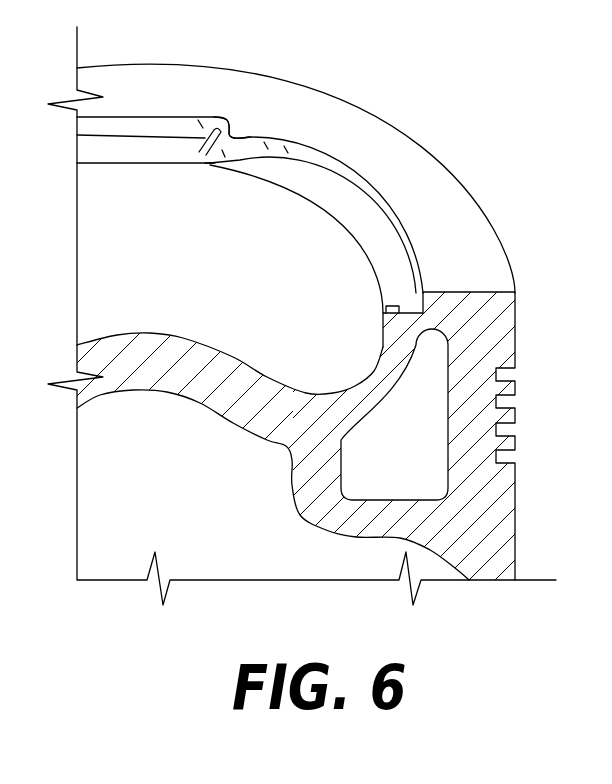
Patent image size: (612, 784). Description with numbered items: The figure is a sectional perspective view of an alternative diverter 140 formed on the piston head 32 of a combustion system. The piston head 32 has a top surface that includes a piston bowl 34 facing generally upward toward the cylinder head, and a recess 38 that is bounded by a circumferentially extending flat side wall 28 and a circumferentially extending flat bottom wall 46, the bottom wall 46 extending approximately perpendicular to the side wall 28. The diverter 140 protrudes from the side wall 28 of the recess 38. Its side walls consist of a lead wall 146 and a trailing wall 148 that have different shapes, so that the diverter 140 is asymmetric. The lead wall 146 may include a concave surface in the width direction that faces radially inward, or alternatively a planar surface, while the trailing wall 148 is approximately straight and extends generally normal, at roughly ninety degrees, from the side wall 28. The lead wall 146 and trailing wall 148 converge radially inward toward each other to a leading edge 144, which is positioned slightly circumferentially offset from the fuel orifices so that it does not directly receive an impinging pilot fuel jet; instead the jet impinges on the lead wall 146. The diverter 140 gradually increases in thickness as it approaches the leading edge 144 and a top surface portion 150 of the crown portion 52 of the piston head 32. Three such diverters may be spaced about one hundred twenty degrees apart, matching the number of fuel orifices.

The crown portion 52 is at (180, 86).
The top surface portion 150 is at (237, 132).
The recess 38 is at (88, 150).
The trailing wall 148 is at (213, 133).
The lead wall 146 is at (251, 152).
The side wall 28 is at (380, 203).
The diverter 140 is at (226, 184).
The leading edge 144 is at (207, 168).
The piston bowl 34 is at (129, 327).
The piston head 32 is at (503, 337).
The bottom wall 46 is at (396, 306).